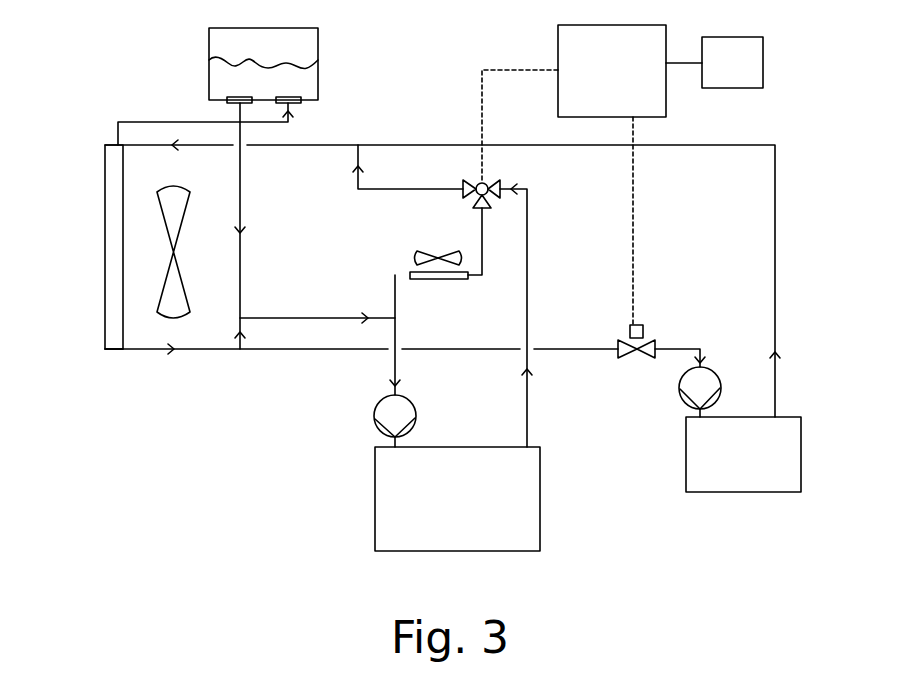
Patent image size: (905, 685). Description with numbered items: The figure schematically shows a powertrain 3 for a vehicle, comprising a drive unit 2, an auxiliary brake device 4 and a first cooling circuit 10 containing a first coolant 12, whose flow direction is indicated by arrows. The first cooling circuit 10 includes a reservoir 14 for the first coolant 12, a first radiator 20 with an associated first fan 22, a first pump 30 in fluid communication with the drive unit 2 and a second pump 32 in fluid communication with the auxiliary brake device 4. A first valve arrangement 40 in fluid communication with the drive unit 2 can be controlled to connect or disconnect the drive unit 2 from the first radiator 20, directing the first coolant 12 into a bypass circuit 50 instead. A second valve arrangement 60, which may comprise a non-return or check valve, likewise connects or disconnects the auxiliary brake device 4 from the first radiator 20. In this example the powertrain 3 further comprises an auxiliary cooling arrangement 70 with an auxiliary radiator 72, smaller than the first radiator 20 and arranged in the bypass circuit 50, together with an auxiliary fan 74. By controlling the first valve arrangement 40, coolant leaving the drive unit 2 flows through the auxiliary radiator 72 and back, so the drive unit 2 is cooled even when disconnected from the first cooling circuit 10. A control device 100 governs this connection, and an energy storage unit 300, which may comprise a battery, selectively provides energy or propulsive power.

The drive unit 2 is at (457, 499).
The powertrain 3 is at (265, 459).
The auxiliary brake device 4 is at (743, 454).
The first cooling circuit 10 is at (221, 359).
The first coolant 12 is at (215, 80).
The reservoir 14 is at (318, 42).
The first radiator 20 is at (105, 242).
The first fan 22 is at (181, 226).
The first pump 30 is at (374, 411).
The second pump 32 is at (680, 388).
The first valve arrangement 40 is at (480, 180).
The bypass circuit 50 is at (483, 265).
The second valve arrangement 60 is at (630, 332).
The auxiliary cooling arrangement 70 is at (395, 270).
The auxiliary radiator 72 is at (447, 279).
The auxiliary fan 74 is at (438, 255).
The control device 100 is at (612, 71).
The energy storage unit 300 is at (714, 62).